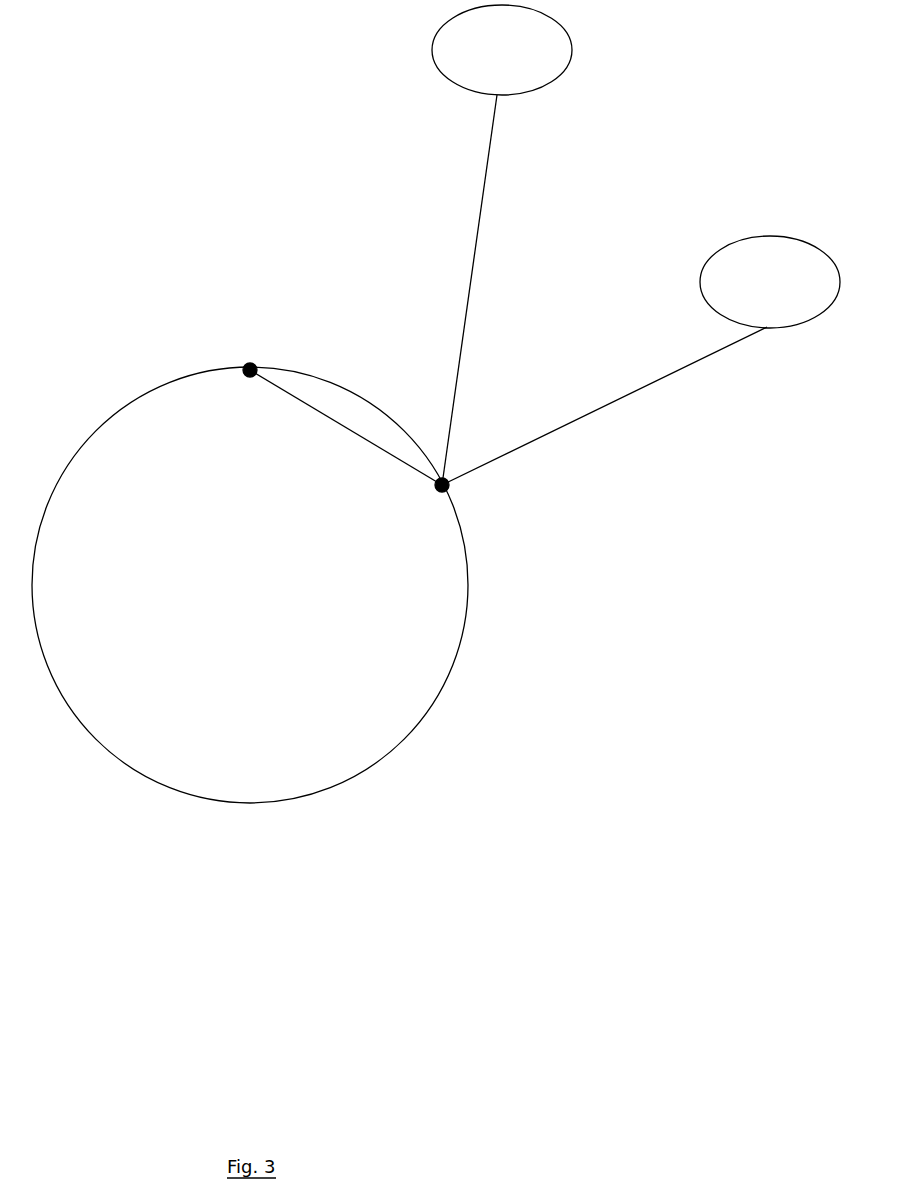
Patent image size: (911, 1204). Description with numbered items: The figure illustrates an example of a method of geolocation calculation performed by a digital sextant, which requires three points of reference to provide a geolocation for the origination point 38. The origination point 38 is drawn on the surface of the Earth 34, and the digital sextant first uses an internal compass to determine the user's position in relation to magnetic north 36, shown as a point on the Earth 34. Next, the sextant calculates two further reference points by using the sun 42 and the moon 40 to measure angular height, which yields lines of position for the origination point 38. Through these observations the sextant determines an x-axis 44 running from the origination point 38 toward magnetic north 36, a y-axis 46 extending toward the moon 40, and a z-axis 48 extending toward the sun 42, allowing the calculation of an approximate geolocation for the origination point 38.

The Earth 34 is at (64, 698).
The magnetic north 36 is at (241, 368).
The origination point 38 is at (433, 488).
The moon 40 is at (433, 47).
The sun 42 is at (710, 262).
The x-axis 44 is at (335, 422).
The y-axis 46 is at (478, 247).
The z-axis 48 is at (640, 390).